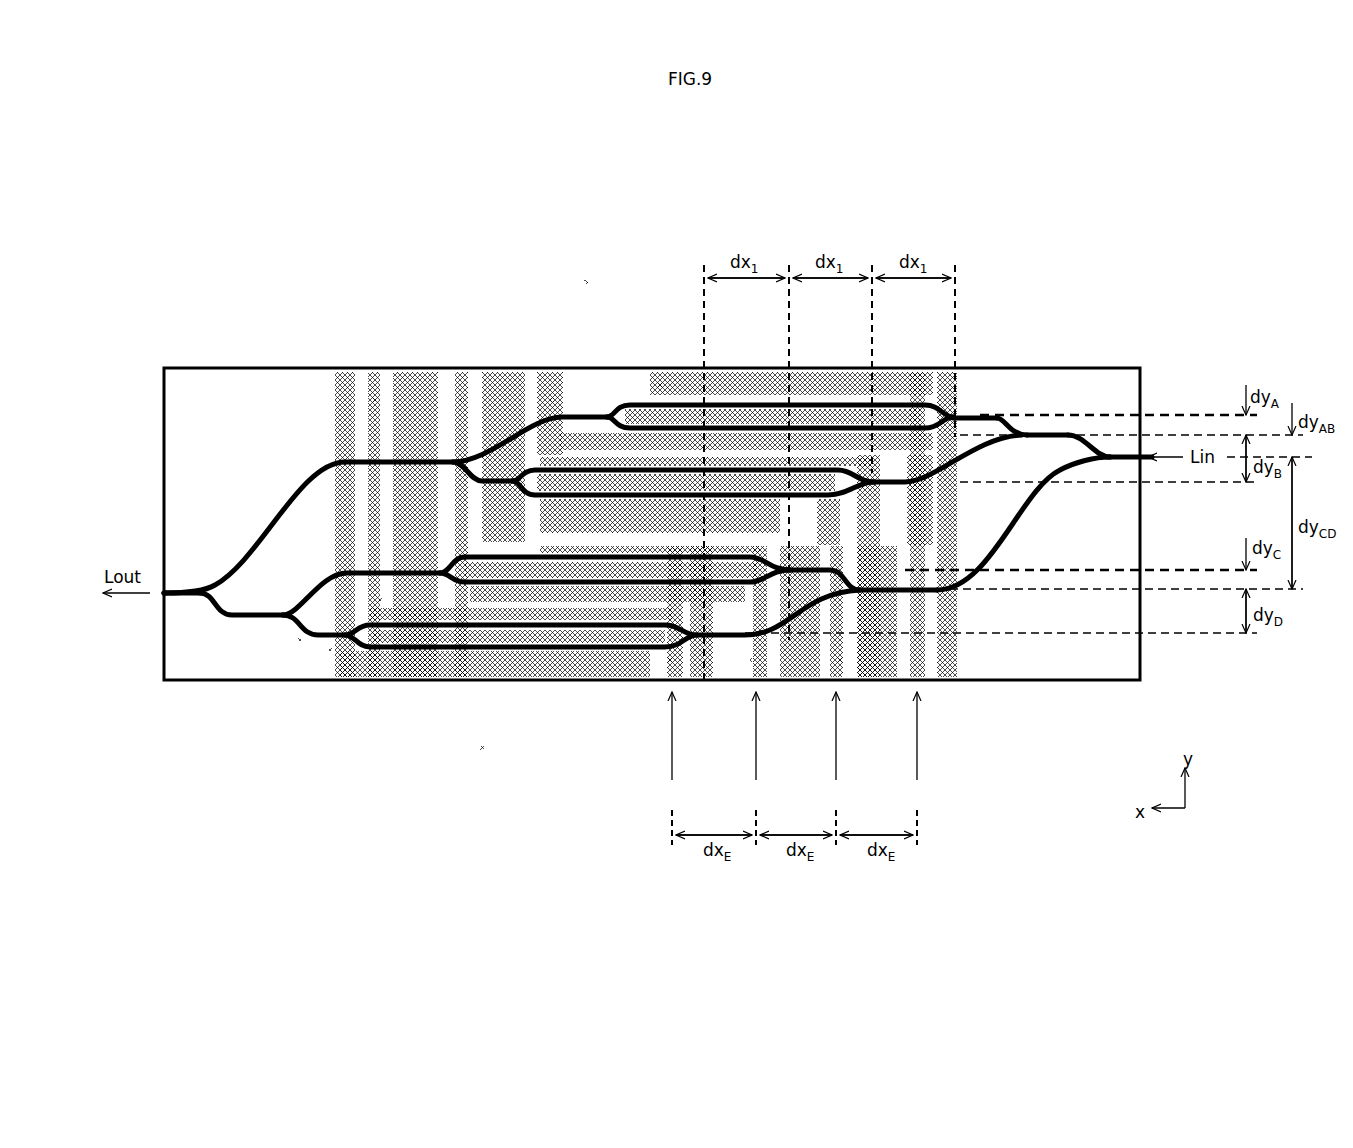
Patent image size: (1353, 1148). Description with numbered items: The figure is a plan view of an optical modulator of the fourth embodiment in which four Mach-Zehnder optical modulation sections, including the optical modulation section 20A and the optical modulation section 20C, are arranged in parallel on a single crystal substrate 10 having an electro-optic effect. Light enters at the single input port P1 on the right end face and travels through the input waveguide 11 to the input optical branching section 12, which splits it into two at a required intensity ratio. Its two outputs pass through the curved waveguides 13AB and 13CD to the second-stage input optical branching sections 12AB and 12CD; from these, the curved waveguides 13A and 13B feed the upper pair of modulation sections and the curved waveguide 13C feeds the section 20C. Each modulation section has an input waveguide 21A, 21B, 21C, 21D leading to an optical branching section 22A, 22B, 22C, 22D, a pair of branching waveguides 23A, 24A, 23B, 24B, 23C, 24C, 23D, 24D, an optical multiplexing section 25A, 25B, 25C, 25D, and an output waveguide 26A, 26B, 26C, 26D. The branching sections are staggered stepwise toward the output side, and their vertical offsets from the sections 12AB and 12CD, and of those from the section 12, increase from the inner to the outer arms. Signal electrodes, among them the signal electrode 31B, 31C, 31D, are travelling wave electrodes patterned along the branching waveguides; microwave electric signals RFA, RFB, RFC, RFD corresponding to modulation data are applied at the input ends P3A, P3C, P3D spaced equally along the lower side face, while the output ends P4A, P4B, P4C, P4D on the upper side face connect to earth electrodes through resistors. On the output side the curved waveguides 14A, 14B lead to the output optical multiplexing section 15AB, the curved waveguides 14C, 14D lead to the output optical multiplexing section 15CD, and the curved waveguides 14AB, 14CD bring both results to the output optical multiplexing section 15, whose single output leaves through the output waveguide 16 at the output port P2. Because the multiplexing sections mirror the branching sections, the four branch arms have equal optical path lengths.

The substrate 10 is at (1105, 681).
The input waveguide 11 is at (1141, 417).
The input optical branching section 12 is at (1115, 455).
The input optical branching section 12AB is at (1040, 433).
The input optical branching section 12CD is at (900, 590).
The curved waveguide 13A is at (1000, 416).
The curved waveguide 13B is at (935, 480).
The curved waveguide 13C is at (855, 592).
The curved waveguide 13AB is at (1075, 433).
The curved waveguide 13CD is at (1010, 520).
The curved waveguide 14A is at (545, 438).
The curved waveguide 14B is at (430, 452).
The curved waveguide 14C is at (350, 632).
The curved waveguide 14D is at (290, 625).
The curved waveguide 14AB is at (357, 427).
The curved waveguide 14CD is at (215, 600).
The output optical multiplexing section 15 is at (170, 600).
The output optical multiplexing section 15AB is at (420, 465).
The output optical multiplexing section 15CD is at (240, 615).
The output waveguide 16 is at (165, 640).
The optical modulation section 20A is at (588, 282).
The optical modulation section 20C is at (482, 748).
The input waveguide 21A is at (960, 405).
The input waveguide 21B is at (900, 468).
The input waveguide 21C is at (800, 560).
The input waveguide 21D is at (705, 628).
The optical branching section 22A is at (945, 428).
The optical branching section 22B is at (880, 495).
The optical branching section 22C is at (795, 585).
The optical branching section 22D is at (690, 650).
The branching waveguide 23A is at (850, 415).
The branching waveguide 23B is at (770, 415).
The branching waveguide 23C is at (600, 572).
The branching waveguide 23D is at (560, 637).
The branching waveguide 24A is at (815, 440).
The branching waveguide 24B is at (745, 440).
The branching waveguide 24C is at (620, 596).
The branching waveguide 24D is at (540, 655).
The optical multiplexing section 25A is at (625, 460).
The optical multiplexing section 25B is at (515, 480).
The optical multiplexing section 25C is at (400, 615).
The optical multiplexing section 25D is at (330, 650).
The output waveguide 26A is at (600, 482).
The output waveguide 26B is at (490, 440).
The output waveguide 26C is at (380, 600).
The output waveguide 26D is at (300, 640).
The signal electrode 31B is at (725, 415).
The signal electrode 31C is at (490, 660).
The signal electrode 31D is at (445, 660).
The input port P1 is at (1148, 460).
The output port P2 is at (163, 593).
The input end P3A is at (930, 600).
The input end P3C is at (752, 660).
The input end P3D is at (670, 660).
The output end P4A is at (660, 385).
The output end P4B is at (552, 400).
The output end P4C is at (462, 400).
The output end P4D is at (375, 400).
The microwave electric signal RFA is at (917, 768).
The microwave electric signal RFB is at (836, 768).
The microwave electric signal RFC is at (756, 768).
The microwave electric signal RFD is at (672, 768).